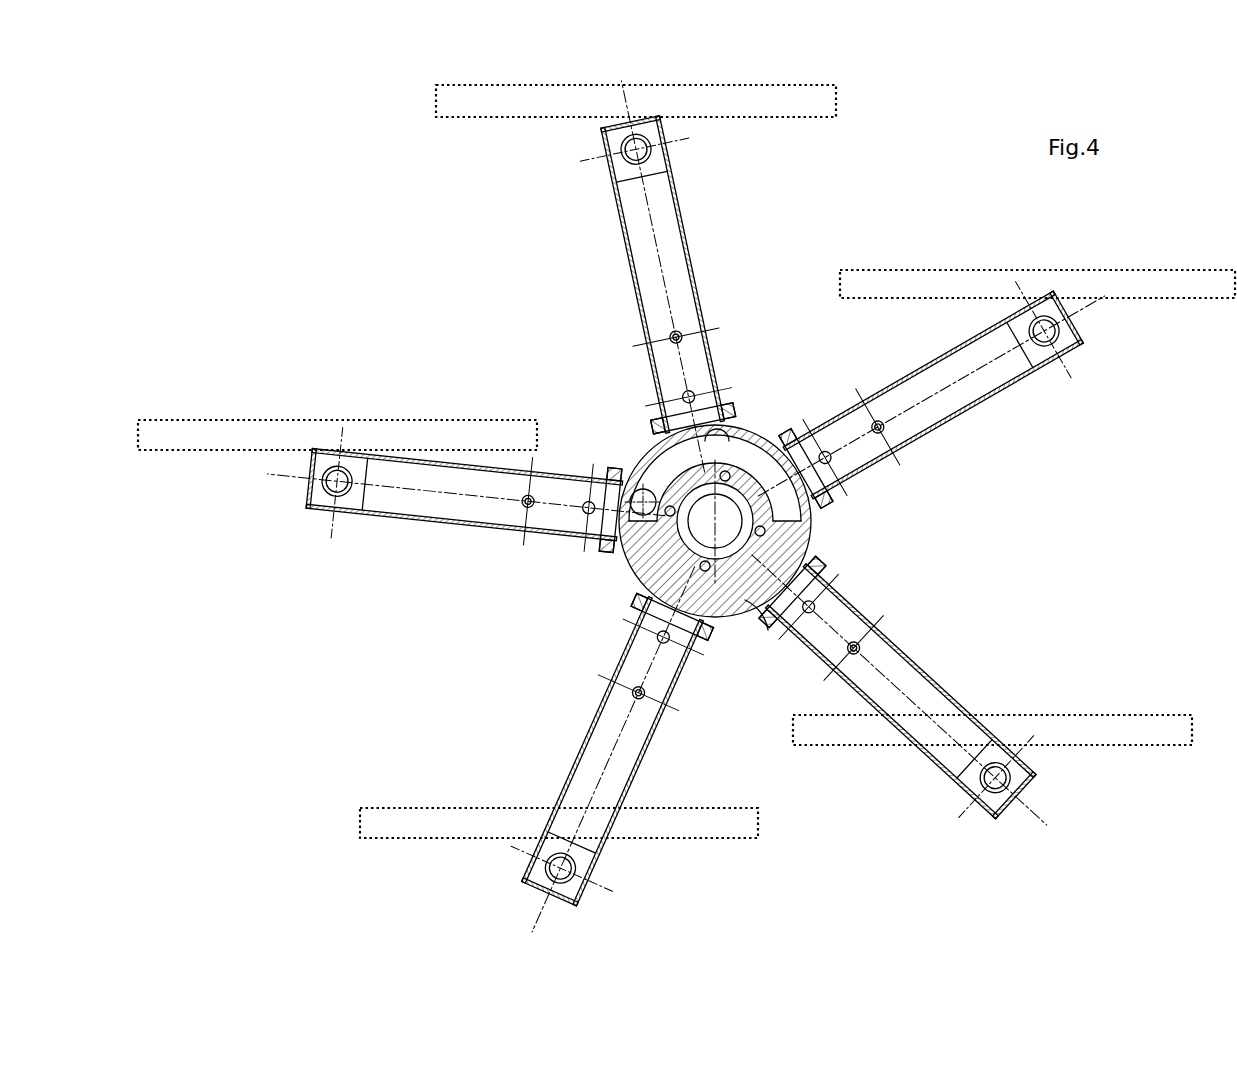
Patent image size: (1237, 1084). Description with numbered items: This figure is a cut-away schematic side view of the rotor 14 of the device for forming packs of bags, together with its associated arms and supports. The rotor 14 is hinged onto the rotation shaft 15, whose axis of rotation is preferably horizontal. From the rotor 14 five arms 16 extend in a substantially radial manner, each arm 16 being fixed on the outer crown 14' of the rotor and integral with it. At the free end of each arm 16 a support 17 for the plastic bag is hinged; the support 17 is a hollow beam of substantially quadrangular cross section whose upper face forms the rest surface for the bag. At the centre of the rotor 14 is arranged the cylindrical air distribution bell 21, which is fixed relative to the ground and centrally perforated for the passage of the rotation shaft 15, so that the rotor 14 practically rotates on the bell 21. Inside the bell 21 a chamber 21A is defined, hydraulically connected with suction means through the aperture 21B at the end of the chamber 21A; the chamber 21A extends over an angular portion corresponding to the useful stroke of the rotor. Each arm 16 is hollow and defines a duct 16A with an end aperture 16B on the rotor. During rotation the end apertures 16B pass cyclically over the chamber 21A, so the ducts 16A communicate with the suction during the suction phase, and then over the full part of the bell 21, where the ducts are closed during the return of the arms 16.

The rotor 14 is at (685, 506).
The outer crown 14' is at (687, 545).
The rotation shaft 15 is at (813, 525).
The arm 16 is at (628, 243).
The duct 16A is at (686, 262).
The end aperture 16B is at (735, 440).
The support 17 is at (522, 118).
The air distribution bell 21 is at (757, 625).
The chamber 21A is at (770, 425).
The aperture 21B is at (648, 470).